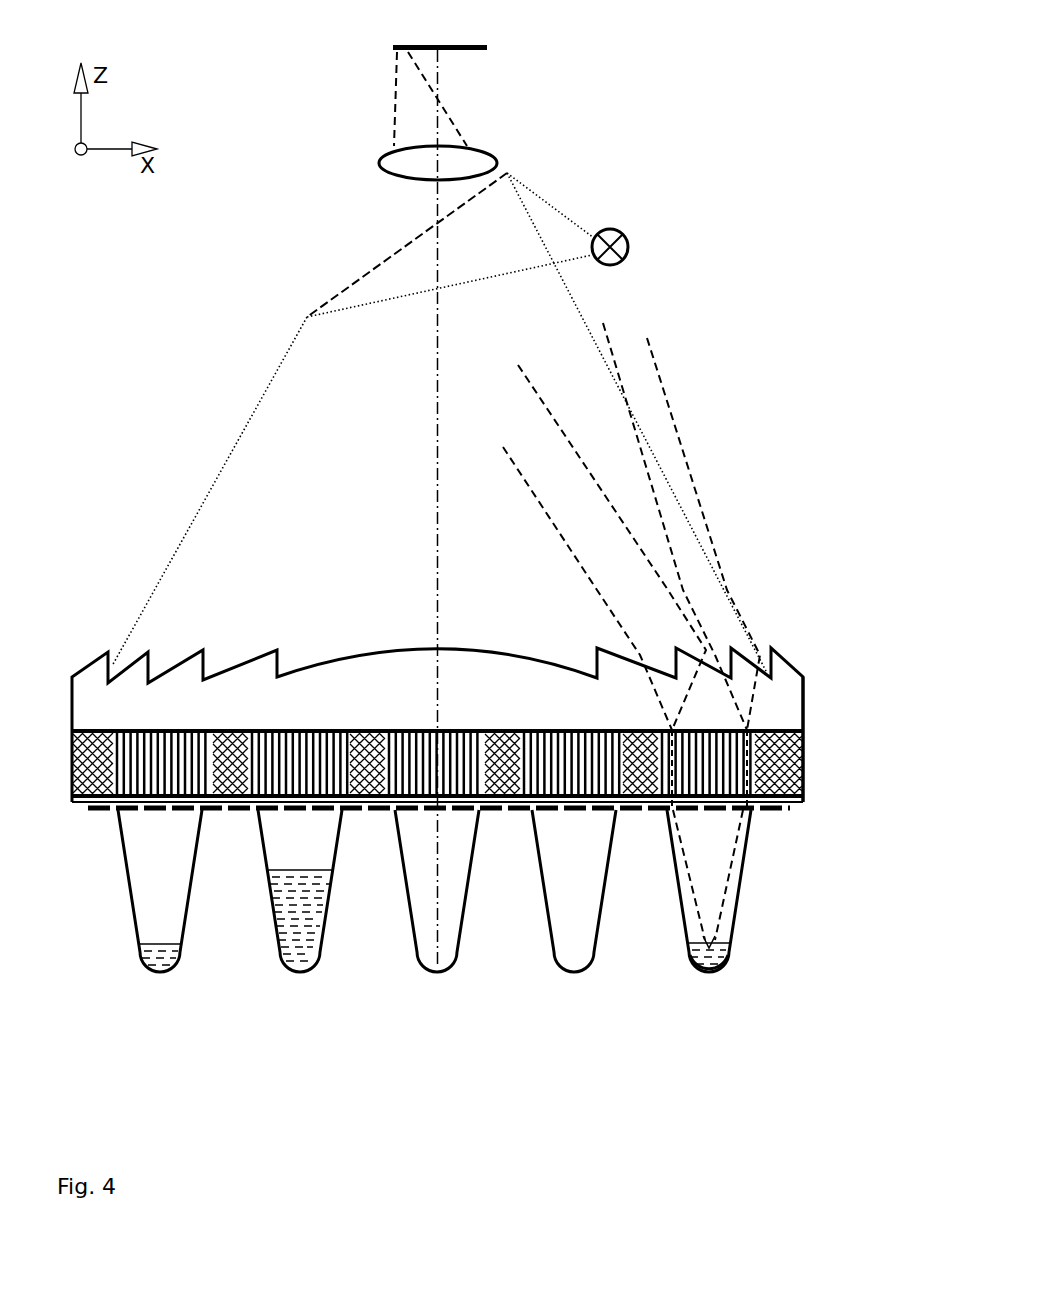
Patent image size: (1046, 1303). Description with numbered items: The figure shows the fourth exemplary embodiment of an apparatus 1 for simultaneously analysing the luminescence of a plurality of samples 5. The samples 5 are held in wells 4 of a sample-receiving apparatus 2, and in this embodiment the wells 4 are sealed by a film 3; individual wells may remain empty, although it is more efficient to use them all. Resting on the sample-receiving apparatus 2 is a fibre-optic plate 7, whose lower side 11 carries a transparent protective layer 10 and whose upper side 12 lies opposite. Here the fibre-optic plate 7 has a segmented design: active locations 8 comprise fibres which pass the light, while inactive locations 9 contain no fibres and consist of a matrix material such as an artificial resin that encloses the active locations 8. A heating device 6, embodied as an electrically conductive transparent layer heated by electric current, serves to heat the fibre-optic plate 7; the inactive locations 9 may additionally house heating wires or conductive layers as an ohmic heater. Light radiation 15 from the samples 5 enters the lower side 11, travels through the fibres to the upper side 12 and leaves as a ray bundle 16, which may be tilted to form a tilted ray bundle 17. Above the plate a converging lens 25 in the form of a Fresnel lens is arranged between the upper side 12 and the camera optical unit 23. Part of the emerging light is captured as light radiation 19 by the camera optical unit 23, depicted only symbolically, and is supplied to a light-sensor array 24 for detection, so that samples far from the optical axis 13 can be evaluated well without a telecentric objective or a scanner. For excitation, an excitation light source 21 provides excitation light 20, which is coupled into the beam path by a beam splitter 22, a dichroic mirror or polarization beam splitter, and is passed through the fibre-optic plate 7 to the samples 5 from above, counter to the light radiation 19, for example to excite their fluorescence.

The apparatus 1 is at (752, 25).
The sample-receiving apparatus 2 is at (747, 853).
The film 3 is at (160, 810).
The wells 4 is at (723, 918).
The samples 5 is at (728, 955).
The heating device 6 is at (372, 730).
The fibre-optic plate 7 is at (803, 768).
The active locations 8 is at (295, 730).
The inactive locations 9 is at (797, 742).
The transparent protective layer 10 is at (800, 802).
The lower side 11 is at (788, 810).
The upper side 12 is at (780, 728).
The optical axis 13 is at (435, 512).
The light radiation 15 is at (720, 895).
The ray bundle 16 is at (755, 705).
The tilted ray bundle 17 is at (720, 548).
The light radiation 19 is at (717, 508).
The excitation light 20 is at (563, 215).
The excitation light source 21 is at (628, 240).
The beam splitter 22 is at (358, 275).
The camera optical unit 23 is at (497, 160).
The light-sensor array 24 is at (487, 48).
The converging lens 25 is at (262, 670).